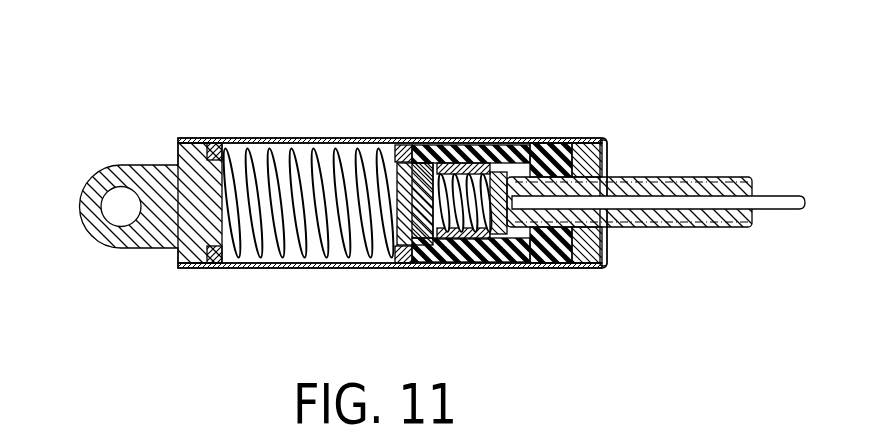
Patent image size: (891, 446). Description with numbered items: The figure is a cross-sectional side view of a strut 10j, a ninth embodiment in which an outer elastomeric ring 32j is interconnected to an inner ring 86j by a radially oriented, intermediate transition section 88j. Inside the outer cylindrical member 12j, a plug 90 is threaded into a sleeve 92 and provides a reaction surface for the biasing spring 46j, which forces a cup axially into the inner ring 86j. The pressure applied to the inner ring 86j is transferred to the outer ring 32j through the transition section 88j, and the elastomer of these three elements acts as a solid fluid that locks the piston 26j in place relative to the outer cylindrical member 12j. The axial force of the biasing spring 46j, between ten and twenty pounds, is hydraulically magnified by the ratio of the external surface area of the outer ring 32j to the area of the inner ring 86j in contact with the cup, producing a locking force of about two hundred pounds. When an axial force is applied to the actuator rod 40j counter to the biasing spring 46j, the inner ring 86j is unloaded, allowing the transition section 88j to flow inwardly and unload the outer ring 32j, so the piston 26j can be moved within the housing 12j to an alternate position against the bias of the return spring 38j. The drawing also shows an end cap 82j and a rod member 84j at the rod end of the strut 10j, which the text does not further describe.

The strut 10j is at (476, 186).
The outer cylindrical member 12j is at (273, 138).
The return spring 38j is at (310, 266).
The plug 90 is at (391, 140).
The sleeve 92 is at (435, 140).
The outer elastomeric ring 32j is at (473, 147).
The biasing spring 46j is at (453, 265).
The piston 26j is at (546, 272).
The transition section 88j is at (543, 147).
The inner ring 86j is at (580, 262).
The tube end 82j is at (618, 148).
The piston rod 84j is at (658, 197).
The actuator rod 40j is at (785, 197).